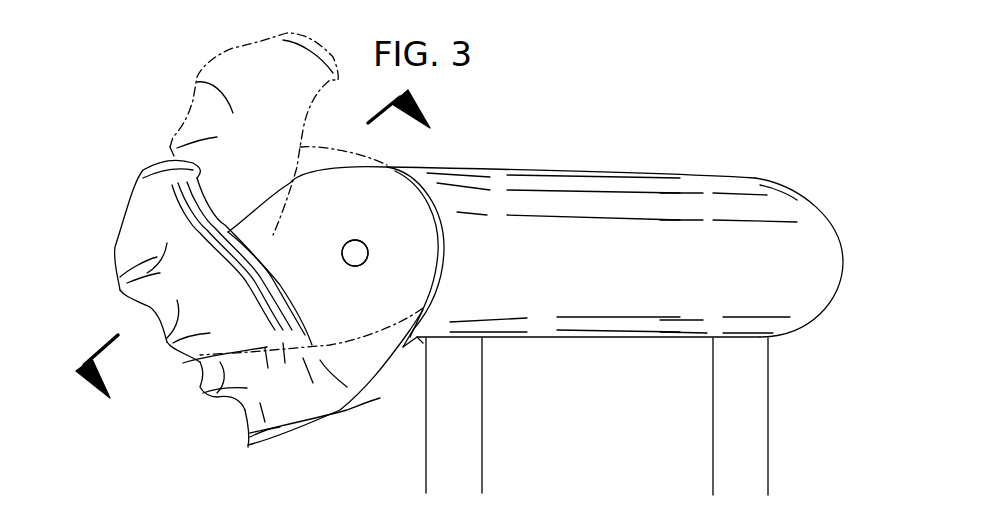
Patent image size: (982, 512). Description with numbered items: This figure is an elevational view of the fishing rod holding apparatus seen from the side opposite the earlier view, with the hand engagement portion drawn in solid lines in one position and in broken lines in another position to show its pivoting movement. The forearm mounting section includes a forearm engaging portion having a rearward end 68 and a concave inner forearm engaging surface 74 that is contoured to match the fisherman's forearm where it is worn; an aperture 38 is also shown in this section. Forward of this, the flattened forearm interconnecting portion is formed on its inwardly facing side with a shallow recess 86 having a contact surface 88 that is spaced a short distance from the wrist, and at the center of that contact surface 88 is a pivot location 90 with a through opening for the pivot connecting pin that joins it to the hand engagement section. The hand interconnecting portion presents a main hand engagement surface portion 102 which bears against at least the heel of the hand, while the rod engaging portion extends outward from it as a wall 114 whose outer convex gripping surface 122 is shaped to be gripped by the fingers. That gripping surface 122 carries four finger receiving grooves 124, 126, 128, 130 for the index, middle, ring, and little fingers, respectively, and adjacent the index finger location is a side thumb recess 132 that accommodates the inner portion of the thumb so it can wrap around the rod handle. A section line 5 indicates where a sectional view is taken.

The section line for FIG. 5 is at (260, 255).
The aperture 38 is at (347, 262).
The rearward end 68 is at (830, 237).
The concave inner forearm engaging surface 74 is at (562, 243).
The shallow recess 86 is at (418, 343).
The contact surface 88 is at (427, 303).
The pivot location 90 is at (368, 253).
The main hand engagement surface portion 102 is at (367, 218).
The wall 114 is at (250, 440).
The gripping surface 122 is at (197, 362).
The finger receiving groove 124 is at (127, 258).
The finger receiving groove 126 is at (150, 307).
The finger receiving groove 128 is at (172, 356).
The finger receiving groove 130 is at (242, 407).
The side thumb recess 132 is at (228, 230).